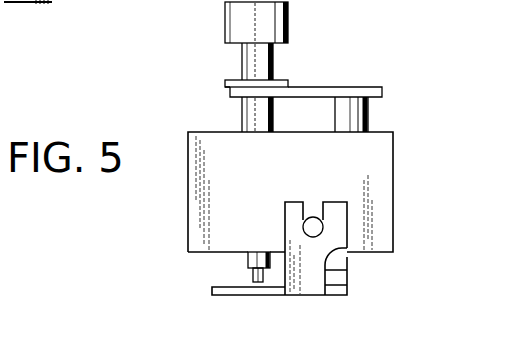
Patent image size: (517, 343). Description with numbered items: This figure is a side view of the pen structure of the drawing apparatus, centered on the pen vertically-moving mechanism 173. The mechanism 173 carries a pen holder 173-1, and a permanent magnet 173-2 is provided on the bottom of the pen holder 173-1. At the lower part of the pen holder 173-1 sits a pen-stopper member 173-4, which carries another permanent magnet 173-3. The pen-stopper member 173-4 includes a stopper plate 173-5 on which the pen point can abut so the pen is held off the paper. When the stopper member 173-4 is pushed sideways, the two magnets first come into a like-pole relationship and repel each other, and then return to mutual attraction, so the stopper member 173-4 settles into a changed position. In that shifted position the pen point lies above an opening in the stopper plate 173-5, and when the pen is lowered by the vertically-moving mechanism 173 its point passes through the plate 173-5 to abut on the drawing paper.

The pen vertically-moving mechanism 173 is at (331, 165).
The pen holder 173-1 is at (395, 153).
The permanent magnet 173-2 is at (348, 260).
The permanent magnet 173-3 is at (348, 278).
The pen-stopper member 173-4 is at (317, 284).
The stopper plate 173-5 is at (236, 296).